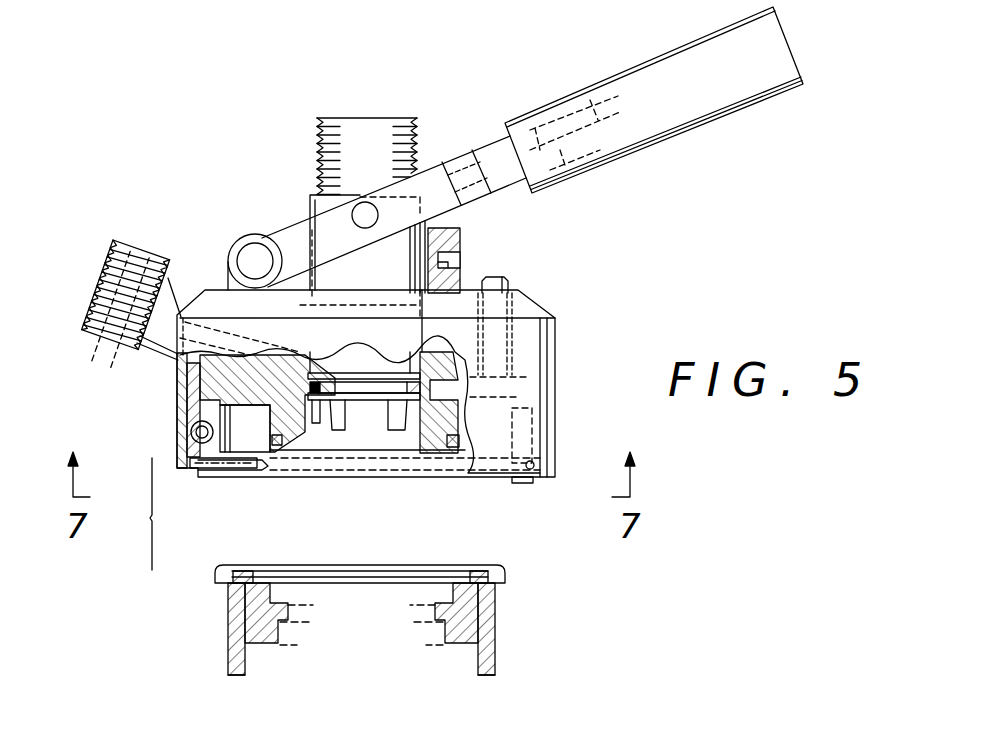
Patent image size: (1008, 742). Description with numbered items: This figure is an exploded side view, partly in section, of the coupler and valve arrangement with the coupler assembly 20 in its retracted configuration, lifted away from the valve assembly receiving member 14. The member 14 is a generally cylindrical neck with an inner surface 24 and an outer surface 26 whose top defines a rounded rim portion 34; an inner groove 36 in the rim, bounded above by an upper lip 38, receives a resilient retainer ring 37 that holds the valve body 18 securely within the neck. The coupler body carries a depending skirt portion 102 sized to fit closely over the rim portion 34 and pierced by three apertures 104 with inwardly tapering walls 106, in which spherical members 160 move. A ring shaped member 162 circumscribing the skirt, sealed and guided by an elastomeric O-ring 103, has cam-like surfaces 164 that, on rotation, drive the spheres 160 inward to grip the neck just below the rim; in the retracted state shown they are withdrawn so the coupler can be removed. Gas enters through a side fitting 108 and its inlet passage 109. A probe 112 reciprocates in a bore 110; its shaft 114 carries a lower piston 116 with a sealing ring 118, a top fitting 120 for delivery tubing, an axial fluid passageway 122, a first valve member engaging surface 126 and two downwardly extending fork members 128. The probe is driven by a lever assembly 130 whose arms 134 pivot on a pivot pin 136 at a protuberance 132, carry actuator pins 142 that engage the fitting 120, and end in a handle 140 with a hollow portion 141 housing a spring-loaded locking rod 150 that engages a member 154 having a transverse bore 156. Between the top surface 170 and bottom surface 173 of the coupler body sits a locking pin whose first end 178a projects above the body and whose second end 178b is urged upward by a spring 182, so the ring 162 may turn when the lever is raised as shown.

The valve assembly receiving member 14 is at (502, 632).
The valve body 18 is at (250, 636).
The coupler assembly 20 is at (555, 293).
The inner surface 24 is at (248, 668).
The outer surface 26 is at (497, 663).
The rim portion 34 is at (508, 580).
The inner groove 36 is at (480, 573).
The resilient retainer ring 37 is at (418, 580).
The upper lip 38 is at (228, 592).
The skirt portion 102 is at (182, 387).
The elastomeric O-ring 103 is at (243, 466).
The apertures 104 is at (196, 462).
The inwardly tapering walls 106 is at (192, 437).
The side fitting 108 is at (110, 237).
The inlet passage 109 is at (180, 350).
The bore 110 is at (318, 332).
The probe 112 is at (364, 375).
The shaft 114 is at (390, 353).
The lower piston 116 is at (376, 388).
The sealing ring 118 is at (267, 403).
The top fitting 120 is at (410, 118).
The fluid passageway 122 is at (367, 100).
The first valve member engaging surface 126 is at (317, 400).
The fork members 128 is at (397, 432).
The lever assembly 130 is at (483, 116).
The protuberance 132 is at (241, 236).
The arms 134 is at (340, 250).
The pivot pin 136 is at (256, 252).
The handle 140 is at (790, 42).
The hollow portion 141 is at (553, 110).
The actuator pins 142 is at (370, 222).
The locking rod 150 is at (415, 180).
The member 154 is at (461, 236).
The transverse bore 156 is at (452, 256).
The spherical members 160 is at (190, 432).
The ring shaped member 162 is at (556, 413).
The cam-like surfaces 164 is at (193, 404).
The top surface 170 is at (213, 283).
The bottom surface 173 is at (523, 483).
The first end 178a is at (507, 277).
The second end 178b is at (503, 366).
The spring 182 is at (505, 353).